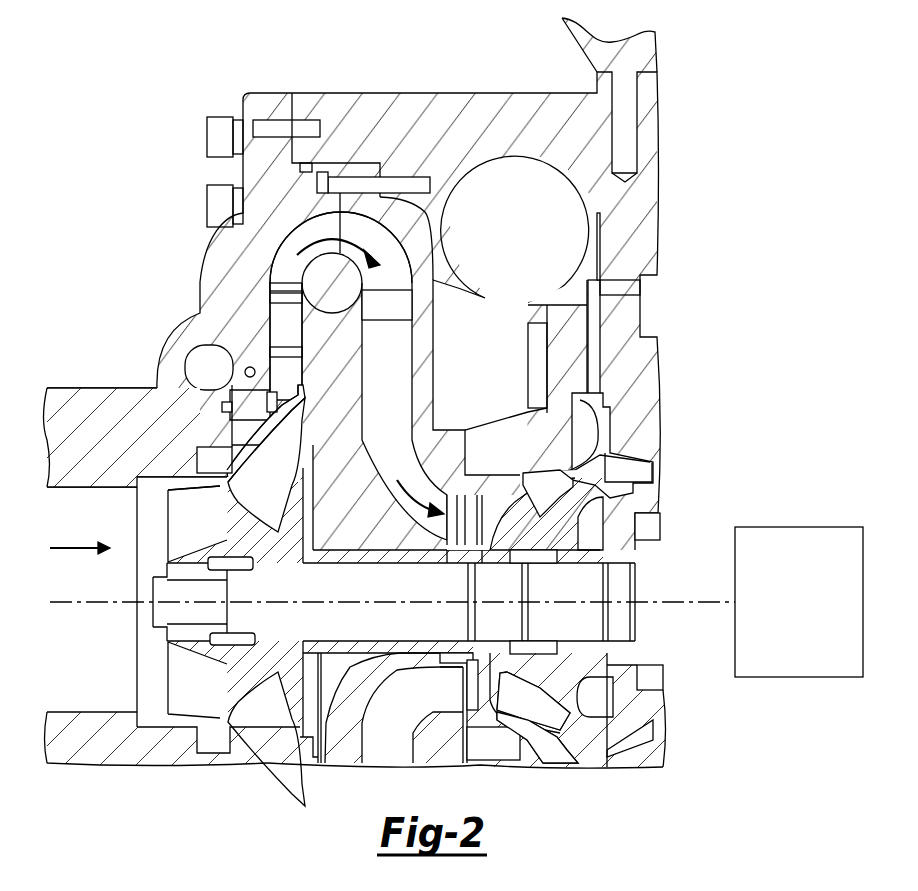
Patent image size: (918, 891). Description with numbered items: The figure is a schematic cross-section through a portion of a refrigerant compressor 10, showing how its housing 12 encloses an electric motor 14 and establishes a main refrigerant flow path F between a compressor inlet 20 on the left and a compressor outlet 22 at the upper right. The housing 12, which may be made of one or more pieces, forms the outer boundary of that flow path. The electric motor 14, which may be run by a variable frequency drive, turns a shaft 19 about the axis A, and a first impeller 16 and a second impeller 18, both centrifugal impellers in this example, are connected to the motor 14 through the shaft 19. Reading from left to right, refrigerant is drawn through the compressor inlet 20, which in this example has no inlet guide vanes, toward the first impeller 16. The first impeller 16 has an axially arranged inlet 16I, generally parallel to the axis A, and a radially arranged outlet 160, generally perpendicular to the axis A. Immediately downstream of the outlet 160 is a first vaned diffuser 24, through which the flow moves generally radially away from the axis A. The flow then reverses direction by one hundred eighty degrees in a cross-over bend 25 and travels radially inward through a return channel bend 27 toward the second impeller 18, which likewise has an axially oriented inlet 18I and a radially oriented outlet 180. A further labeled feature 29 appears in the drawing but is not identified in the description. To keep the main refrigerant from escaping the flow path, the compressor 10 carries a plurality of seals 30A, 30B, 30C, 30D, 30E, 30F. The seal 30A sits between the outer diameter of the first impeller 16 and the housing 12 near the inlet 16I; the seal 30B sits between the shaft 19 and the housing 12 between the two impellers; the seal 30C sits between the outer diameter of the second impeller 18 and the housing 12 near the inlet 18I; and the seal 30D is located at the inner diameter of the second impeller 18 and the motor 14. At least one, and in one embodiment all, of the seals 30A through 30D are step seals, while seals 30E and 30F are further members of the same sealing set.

The refrigerant compressor 10 is at (437, 412).
The housing 12 is at (385, 284).
The electric motor 14 is at (813, 608).
The first impeller 16 is at (160, 627).
The inlet of the first impeller 16I is at (167, 507).
The second impeller 18 is at (560, 680).
The inlet of the second impeller 18I is at (463, 692).
The shaft 19 is at (637, 655).
The compressor inlet 20 is at (85, 683).
The compressor outlet 22 is at (570, 218).
The first vaned diffuser 24 is at (282, 328).
The cross-over bend 25 is at (338, 228).
The return channel bend 27 is at (390, 388).
The cavity 29 is at (400, 325).
The seal 30A is at (127, 463).
The seal 30B is at (397, 653).
The seal 30C is at (503, 470).
The seal 30D is at (633, 488).
The seal 30E is at (262, 406).
The seal 30F is at (587, 413).
The outlet of the first impeller 160 is at (282, 398).
The outlet of the second impeller 180 is at (590, 390).